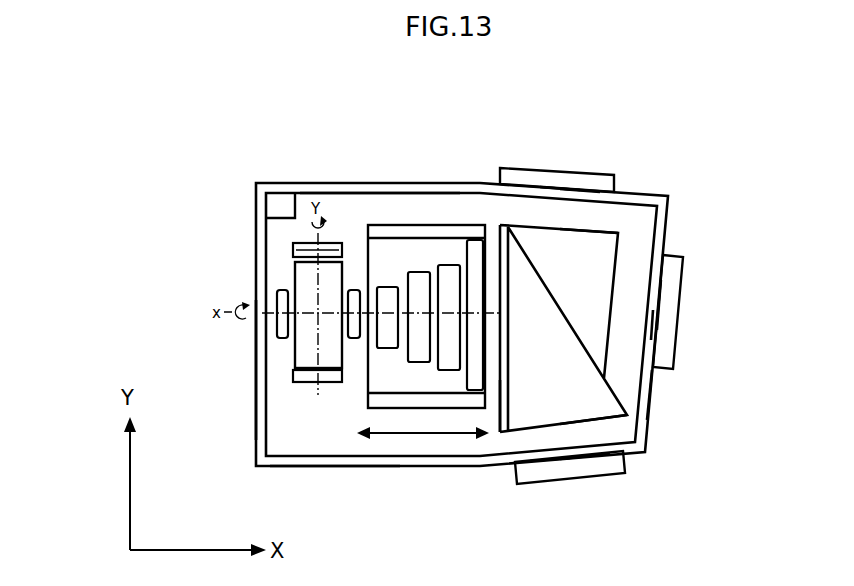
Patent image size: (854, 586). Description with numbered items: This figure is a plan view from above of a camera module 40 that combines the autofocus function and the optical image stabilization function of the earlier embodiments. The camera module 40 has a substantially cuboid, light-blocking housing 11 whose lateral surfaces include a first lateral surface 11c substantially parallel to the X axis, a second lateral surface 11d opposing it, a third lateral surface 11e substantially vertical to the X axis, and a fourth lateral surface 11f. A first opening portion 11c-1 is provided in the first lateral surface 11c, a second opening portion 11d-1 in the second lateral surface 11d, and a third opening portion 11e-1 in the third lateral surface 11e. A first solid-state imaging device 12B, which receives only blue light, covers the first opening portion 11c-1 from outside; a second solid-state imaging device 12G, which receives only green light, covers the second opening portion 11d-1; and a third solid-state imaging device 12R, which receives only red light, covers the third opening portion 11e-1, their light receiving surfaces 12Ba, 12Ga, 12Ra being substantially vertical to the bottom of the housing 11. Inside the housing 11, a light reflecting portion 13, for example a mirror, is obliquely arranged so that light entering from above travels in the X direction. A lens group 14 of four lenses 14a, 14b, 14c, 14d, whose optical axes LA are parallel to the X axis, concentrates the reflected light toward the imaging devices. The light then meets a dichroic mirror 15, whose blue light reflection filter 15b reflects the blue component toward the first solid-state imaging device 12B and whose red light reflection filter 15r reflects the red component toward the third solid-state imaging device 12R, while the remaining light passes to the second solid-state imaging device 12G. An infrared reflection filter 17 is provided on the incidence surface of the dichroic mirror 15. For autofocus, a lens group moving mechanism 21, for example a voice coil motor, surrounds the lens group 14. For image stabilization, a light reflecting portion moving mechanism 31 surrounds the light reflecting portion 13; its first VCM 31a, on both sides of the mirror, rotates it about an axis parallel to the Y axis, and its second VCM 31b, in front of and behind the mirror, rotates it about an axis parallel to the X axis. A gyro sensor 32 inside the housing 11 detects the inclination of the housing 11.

The housing 11 is at (288, 172).
The first lateral surface 11c is at (292, 466).
The first opening portion 11c-1 is at (549, 460).
The second lateral surface 11d is at (648, 392).
The second opening portion 11d-1 is at (653, 326).
The third lateral surface 11e is at (447, 192).
The third opening portion 11e-1 is at (577, 193).
The fourth lateral surface 11f is at (256, 441).
The third solid-state imaging device 12R is at (510, 176).
The light receiving surface 12Ra is at (552, 190).
The second solid-state imaging device 12G is at (675, 268).
The light receiving surface 12Ga is at (665, 298).
The first solid-state imaging device 12B is at (582, 470).
The light receiving surface 12Ba is at (598, 474).
The light reflecting portion 13 is at (337, 280).
The lens group 14 is at (402, 405).
The lens 14a is at (388, 348).
The lens 14b is at (419, 362).
The lens 14c is at (449, 370).
The lens 14d is at (472, 380).
The dichroic mirror 15 is at (622, 225).
The red light reflection filter 15r is at (618, 250).
The blue light reflection filter 15b is at (618, 413).
The infrared reflection filter 17 is at (503, 432).
The lens group moving mechanism 21 is at (425, 232).
The light reflecting portion moving mechanism 31 is at (238, 312).
The first VCM 31a is at (294, 249).
The second VCM 31b is at (348, 330).
The gyro sensor 32 is at (276, 202).
The camera module 40 is at (655, 150).
The optical axis LA is at (375, 313).